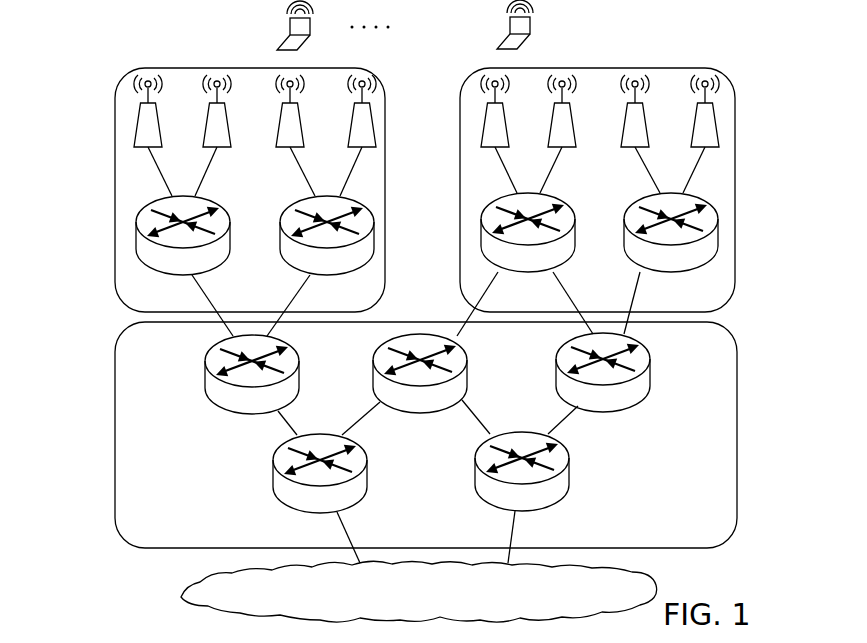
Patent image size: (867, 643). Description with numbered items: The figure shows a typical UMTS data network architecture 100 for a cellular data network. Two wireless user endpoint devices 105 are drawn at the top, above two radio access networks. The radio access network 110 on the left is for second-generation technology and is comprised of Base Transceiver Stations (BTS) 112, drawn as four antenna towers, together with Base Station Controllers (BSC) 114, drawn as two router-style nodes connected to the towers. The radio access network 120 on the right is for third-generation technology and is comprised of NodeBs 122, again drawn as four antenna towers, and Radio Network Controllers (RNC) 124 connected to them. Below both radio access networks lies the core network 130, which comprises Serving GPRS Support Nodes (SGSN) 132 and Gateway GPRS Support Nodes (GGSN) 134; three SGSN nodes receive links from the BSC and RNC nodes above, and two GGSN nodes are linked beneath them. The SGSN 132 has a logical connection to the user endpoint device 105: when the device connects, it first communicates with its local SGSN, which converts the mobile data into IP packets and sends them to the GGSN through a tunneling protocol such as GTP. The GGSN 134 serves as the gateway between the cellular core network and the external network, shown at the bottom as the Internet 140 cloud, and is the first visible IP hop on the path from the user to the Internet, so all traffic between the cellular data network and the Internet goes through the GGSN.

The UMTS data network architecture 100 is at (707, 28).
The wireless user endpoint device 105 is at (289, 32).
The radio access network 110 is at (90, 66).
The Base Transceiver Station 112 is at (142, 117).
The Base Station Controller 114 is at (152, 205).
The radio access network 120 is at (748, 62).
The NodeB 122 is at (500, 115).
The Radio Network Controller 124 is at (495, 204).
The core network 130 is at (90, 320).
The Serving GPRS Support Node 132 is at (215, 388).
The Gateway GPRS Support Node 134 is at (280, 486).
The Internet 140 is at (181, 597).